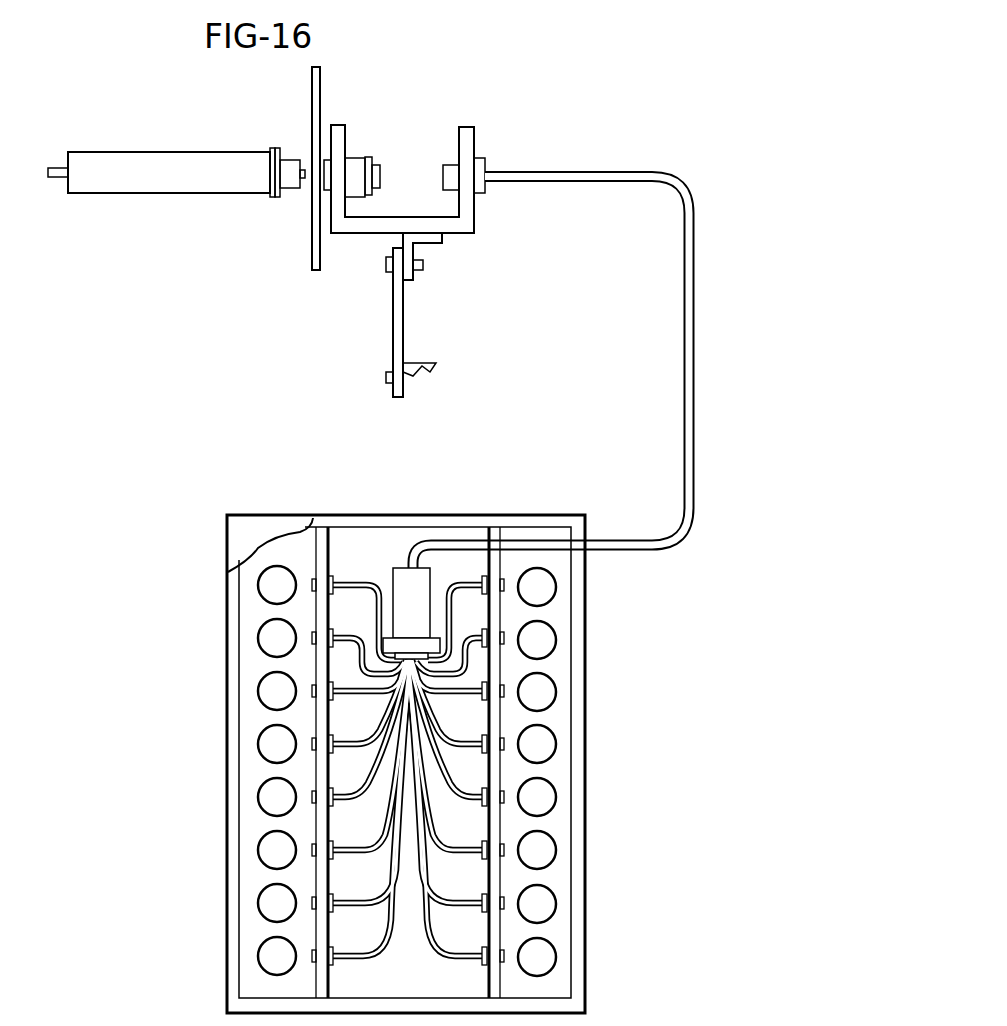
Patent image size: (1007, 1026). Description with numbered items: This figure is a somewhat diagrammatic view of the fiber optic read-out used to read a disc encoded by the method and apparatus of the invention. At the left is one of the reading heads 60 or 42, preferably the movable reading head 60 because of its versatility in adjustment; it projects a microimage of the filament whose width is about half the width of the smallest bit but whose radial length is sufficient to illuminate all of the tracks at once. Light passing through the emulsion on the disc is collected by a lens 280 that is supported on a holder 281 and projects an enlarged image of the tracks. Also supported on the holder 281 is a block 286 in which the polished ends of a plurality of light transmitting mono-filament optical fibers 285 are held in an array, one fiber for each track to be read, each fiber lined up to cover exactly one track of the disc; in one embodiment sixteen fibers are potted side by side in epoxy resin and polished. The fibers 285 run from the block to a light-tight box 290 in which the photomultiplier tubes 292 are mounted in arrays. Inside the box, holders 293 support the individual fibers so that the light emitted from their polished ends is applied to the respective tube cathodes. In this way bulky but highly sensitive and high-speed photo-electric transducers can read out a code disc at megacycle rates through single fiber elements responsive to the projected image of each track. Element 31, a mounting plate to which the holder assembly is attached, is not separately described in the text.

The reading head 42 is at (176, 150).
The movable reading head 60 is at (156, 137).
The lens 280 is at (360, 160).
The holder 281 is at (457, 227).
The block 286 is at (482, 158).
The light transmitting mono-filament optical fibers 285 is at (647, 172).
The mounting plate 31 is at (413, 378).
The light-tight box 290 is at (238, 537).
The holders 293 is at (337, 540).
The photomultiplier tubes 292 is at (273, 592).